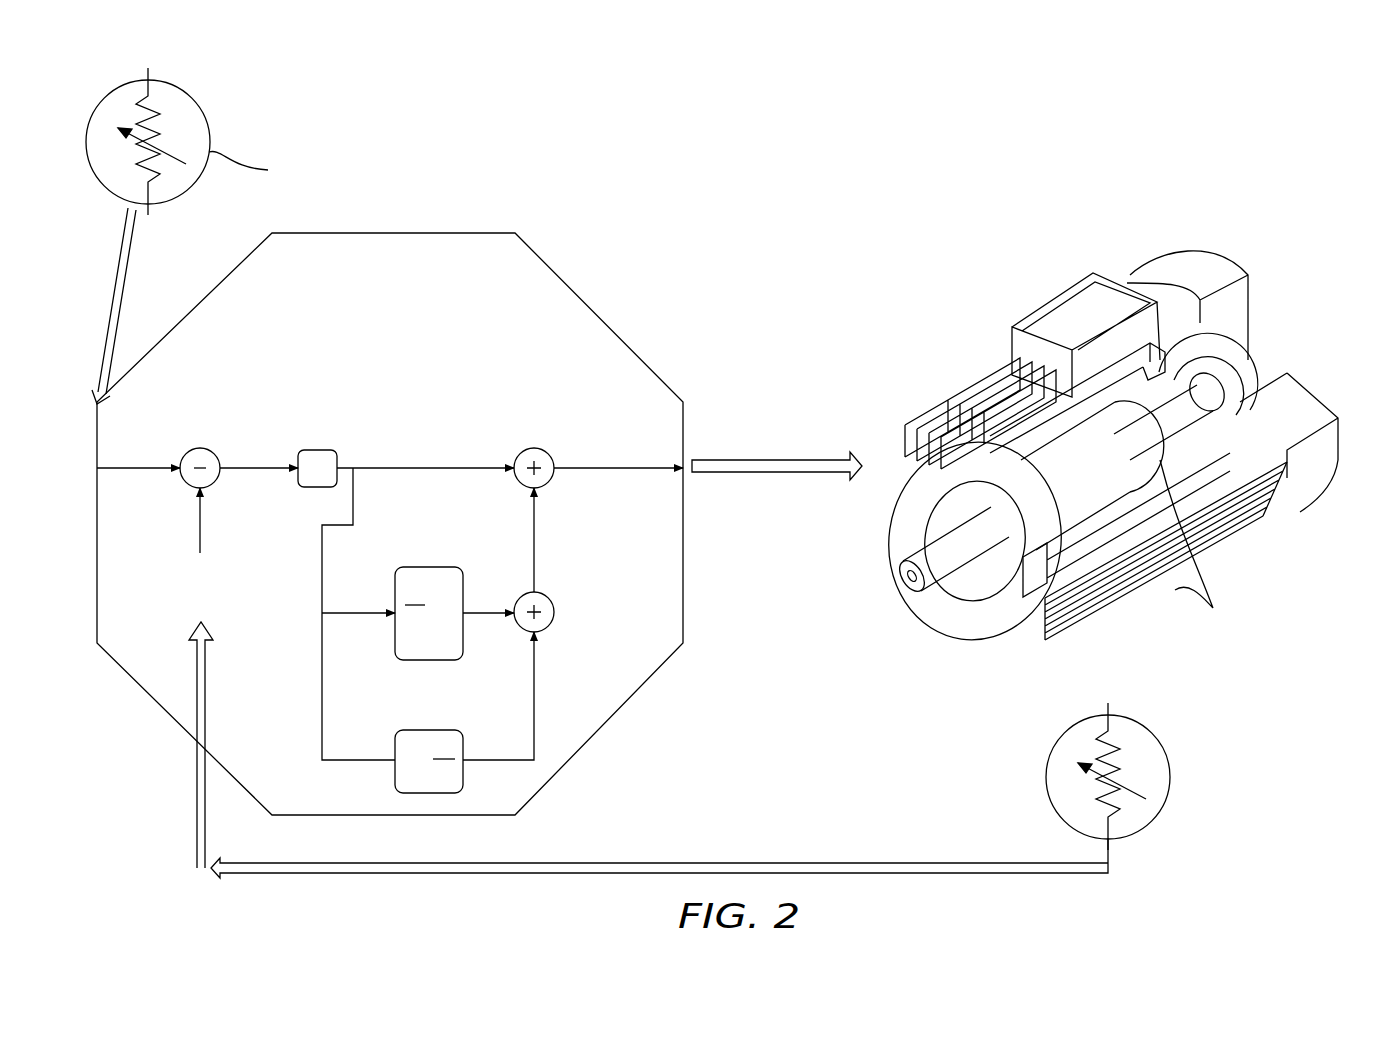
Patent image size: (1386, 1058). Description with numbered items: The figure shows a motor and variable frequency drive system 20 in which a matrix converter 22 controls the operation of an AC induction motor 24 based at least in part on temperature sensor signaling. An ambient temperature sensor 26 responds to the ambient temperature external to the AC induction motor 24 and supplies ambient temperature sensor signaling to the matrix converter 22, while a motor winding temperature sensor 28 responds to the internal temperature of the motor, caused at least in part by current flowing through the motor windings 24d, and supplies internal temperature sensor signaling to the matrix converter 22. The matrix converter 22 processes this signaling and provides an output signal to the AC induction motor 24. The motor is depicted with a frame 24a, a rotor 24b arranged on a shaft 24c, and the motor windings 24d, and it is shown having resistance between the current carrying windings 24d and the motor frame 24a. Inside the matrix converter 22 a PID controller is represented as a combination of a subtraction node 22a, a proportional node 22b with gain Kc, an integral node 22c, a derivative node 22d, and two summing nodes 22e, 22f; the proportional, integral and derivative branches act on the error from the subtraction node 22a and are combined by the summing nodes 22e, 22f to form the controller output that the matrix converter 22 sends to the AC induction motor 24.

The motor and variable frequency drive system 20 is at (1276, 148).
The matrix converter 22 is at (390, 535).
The subtraction node 22a is at (200, 447).
The proportional node 22b is at (316, 450).
The integral node 22c is at (395, 645).
The derivative node 22d is at (395, 775).
The integral-derivative summing junction 22e is at (554, 608).
The output summing junction 22f is at (534, 447).
The AC induction motor 24 is at (1108, 465).
The frame 24a is at (1082, 590).
The rotor 24b is at (1030, 443).
The shaft 24c is at (933, 583).
The motor windings 24d is at (1243, 407).
The ambient temperature sensor 26 is at (205, 95).
The motor winding temperature sensor 28 is at (1170, 770).